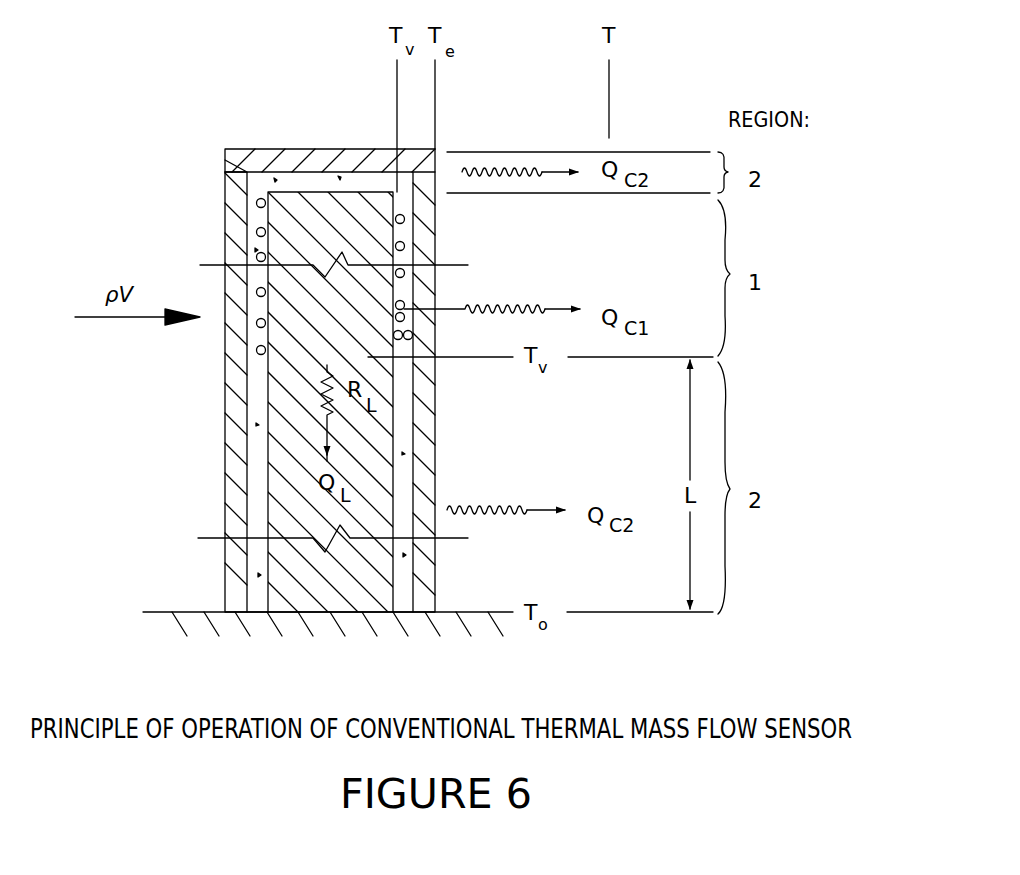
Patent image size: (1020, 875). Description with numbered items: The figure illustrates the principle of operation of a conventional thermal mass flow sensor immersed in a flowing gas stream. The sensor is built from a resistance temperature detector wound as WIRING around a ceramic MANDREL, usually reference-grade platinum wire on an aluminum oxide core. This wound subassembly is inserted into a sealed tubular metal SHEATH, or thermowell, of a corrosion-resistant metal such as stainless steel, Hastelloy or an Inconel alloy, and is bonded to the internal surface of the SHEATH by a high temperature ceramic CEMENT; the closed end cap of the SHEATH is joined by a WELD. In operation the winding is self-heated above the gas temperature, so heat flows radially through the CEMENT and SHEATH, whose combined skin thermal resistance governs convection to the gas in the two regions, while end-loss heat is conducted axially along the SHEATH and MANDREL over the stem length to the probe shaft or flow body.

The weld WELD is at (222, 165).
The sheath SHEATH is at (222, 214).
The ceramic cement CEMENT is at (251, 252).
The RTD wire WIRING is at (247, 287).
The ceramic mandrel MANDREL is at (298, 356).